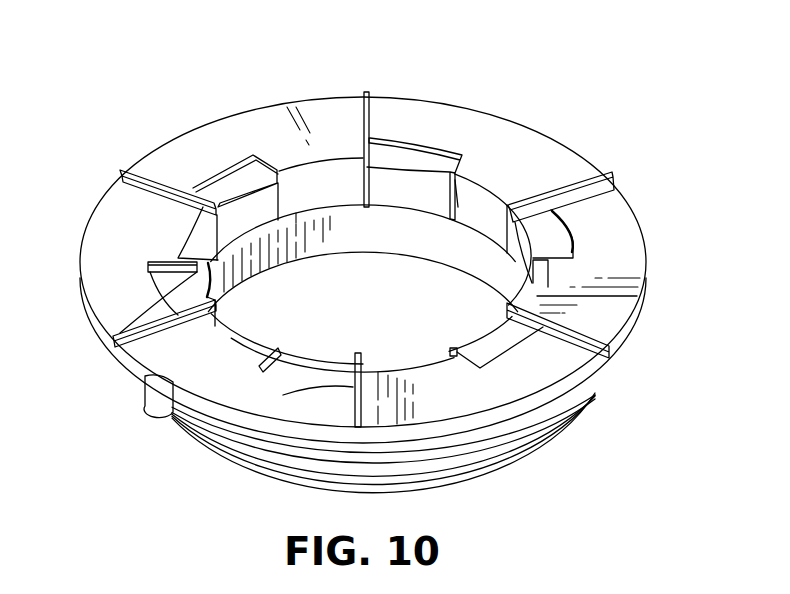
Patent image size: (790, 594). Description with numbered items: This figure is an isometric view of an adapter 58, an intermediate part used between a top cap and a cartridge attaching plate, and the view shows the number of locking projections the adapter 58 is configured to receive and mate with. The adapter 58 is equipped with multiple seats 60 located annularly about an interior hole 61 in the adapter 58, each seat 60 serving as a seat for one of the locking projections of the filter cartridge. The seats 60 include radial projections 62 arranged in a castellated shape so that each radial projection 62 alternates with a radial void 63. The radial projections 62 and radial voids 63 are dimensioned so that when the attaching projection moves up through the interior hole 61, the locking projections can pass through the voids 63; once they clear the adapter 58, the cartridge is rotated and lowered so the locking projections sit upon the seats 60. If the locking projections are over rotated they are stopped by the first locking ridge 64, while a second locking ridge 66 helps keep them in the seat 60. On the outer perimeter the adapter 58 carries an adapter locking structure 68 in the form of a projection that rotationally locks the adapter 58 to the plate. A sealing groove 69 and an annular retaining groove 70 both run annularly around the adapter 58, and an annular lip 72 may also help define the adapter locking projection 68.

The adapter 58 is at (111, 71).
The seat 60 is at (207, 192).
The interior hole 61 is at (440, 290).
The radial projection 62 is at (110, 335).
The radial void 63 is at (313, 183).
The first locking ridge 64 is at (120, 171).
The second locking ridge 66 is at (458, 200).
The adapter locking structure 68 is at (152, 397).
The sealing groove 69 is at (220, 441).
The annular retaining groove 70 is at (500, 462).
The annular lip 72 is at (608, 352).